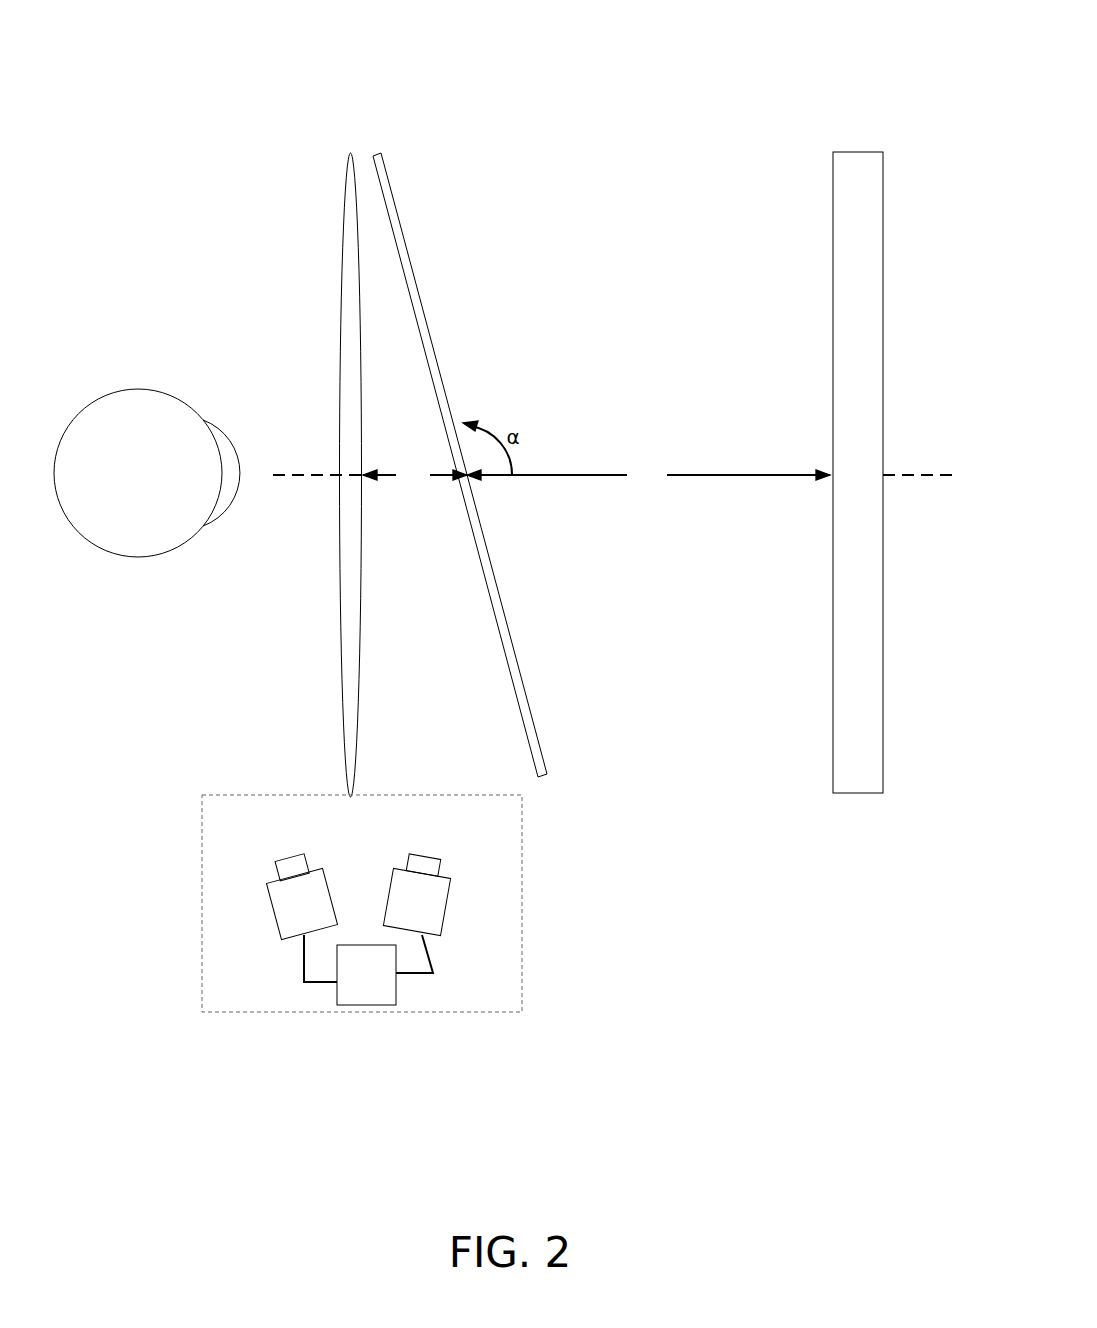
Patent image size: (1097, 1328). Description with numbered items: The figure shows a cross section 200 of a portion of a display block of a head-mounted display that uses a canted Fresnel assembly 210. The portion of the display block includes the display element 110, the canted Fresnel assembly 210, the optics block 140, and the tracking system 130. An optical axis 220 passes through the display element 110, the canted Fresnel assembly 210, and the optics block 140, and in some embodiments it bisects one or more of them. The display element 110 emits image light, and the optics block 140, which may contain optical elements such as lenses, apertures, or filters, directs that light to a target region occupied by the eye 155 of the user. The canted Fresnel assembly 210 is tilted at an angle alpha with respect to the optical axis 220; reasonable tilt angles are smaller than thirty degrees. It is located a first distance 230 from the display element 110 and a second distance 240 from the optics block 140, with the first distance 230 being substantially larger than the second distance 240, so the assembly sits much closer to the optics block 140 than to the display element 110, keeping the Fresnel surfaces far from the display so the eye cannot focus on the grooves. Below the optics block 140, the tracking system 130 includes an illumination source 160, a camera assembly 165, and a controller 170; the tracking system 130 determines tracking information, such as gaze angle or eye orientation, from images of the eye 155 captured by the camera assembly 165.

The cross section 200 is at (99, 93).
The display element 110 is at (883, 272).
The tracking system 130 is at (460, 996).
The optics block 140 is at (355, 163).
The eye 155 is at (80, 532).
The illumination source 160 is at (277, 923).
The camera assembly 165 is at (418, 907).
The controller 170 is at (370, 982).
The canted Fresnel assembly 210 is at (397, 213).
The optical axis 220 is at (950, 478).
The first distance 230 is at (648, 474).
The second distance 240 is at (415, 474).